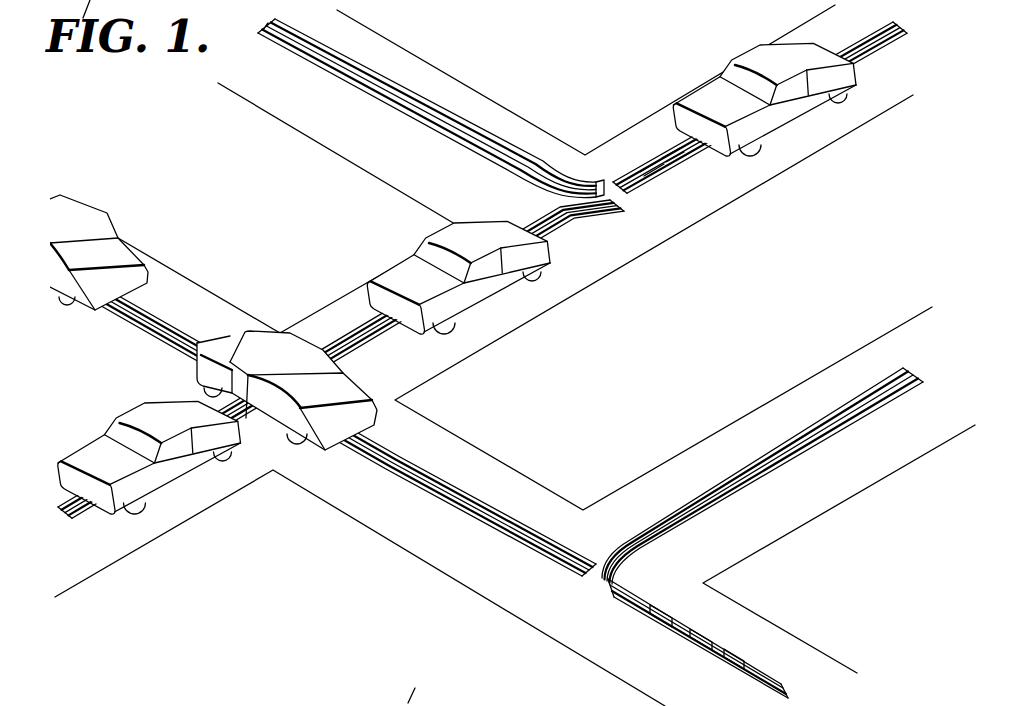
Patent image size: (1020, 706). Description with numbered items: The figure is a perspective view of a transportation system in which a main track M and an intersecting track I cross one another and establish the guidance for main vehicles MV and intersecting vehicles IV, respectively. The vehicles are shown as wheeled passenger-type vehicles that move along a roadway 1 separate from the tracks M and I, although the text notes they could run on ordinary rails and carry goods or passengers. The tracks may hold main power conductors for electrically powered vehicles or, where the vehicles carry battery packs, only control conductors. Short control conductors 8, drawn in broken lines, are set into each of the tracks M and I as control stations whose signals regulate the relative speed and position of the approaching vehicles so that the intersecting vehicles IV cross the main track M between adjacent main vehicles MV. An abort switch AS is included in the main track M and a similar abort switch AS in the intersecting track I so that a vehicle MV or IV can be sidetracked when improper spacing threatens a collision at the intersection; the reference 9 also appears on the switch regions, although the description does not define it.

The roadway 1 is at (655, 230).
The main track M is at (384, 349).
The intersecting track I is at (516, 521).
The abort switch AS is at (599, 165).
The switch rail 9 is at (683, 155).
The control conductors 8 is at (675, 155).
The intersecting vehicles IV is at (105, 215).
The main vehicles MV is at (792, 116).